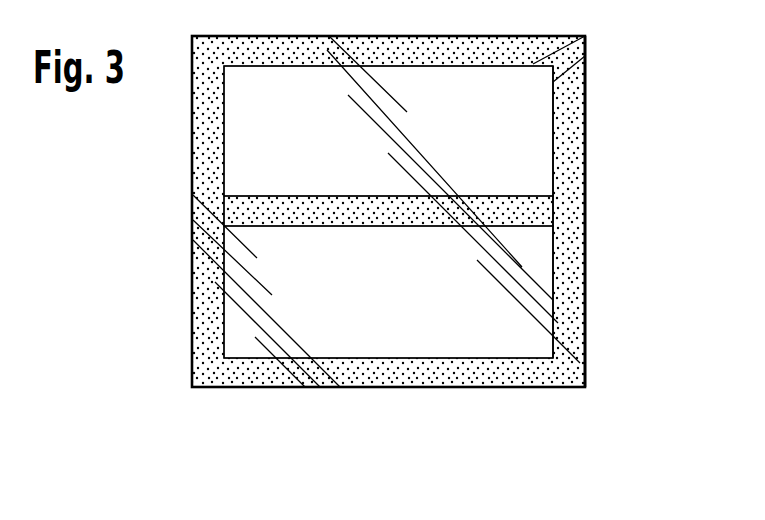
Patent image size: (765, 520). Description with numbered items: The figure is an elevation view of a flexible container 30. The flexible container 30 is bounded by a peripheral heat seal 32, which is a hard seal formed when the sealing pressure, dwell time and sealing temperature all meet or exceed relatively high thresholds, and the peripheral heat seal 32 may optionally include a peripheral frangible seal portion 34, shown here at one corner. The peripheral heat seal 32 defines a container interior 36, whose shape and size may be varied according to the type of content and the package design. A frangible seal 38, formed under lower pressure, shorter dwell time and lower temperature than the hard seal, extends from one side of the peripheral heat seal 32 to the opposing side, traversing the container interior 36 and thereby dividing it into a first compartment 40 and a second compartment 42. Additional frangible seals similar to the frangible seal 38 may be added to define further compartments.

The flexible container 30 is at (620, 148).
The peripheral heat seal 32 is at (568, 258).
The peripheral frangible seal portion 34 is at (587, 38).
The container interior 36 is at (250, 136).
The frangible seal 38 is at (260, 197).
The first compartment 40 is at (358, 156).
The second compartment 42 is at (358, 331).